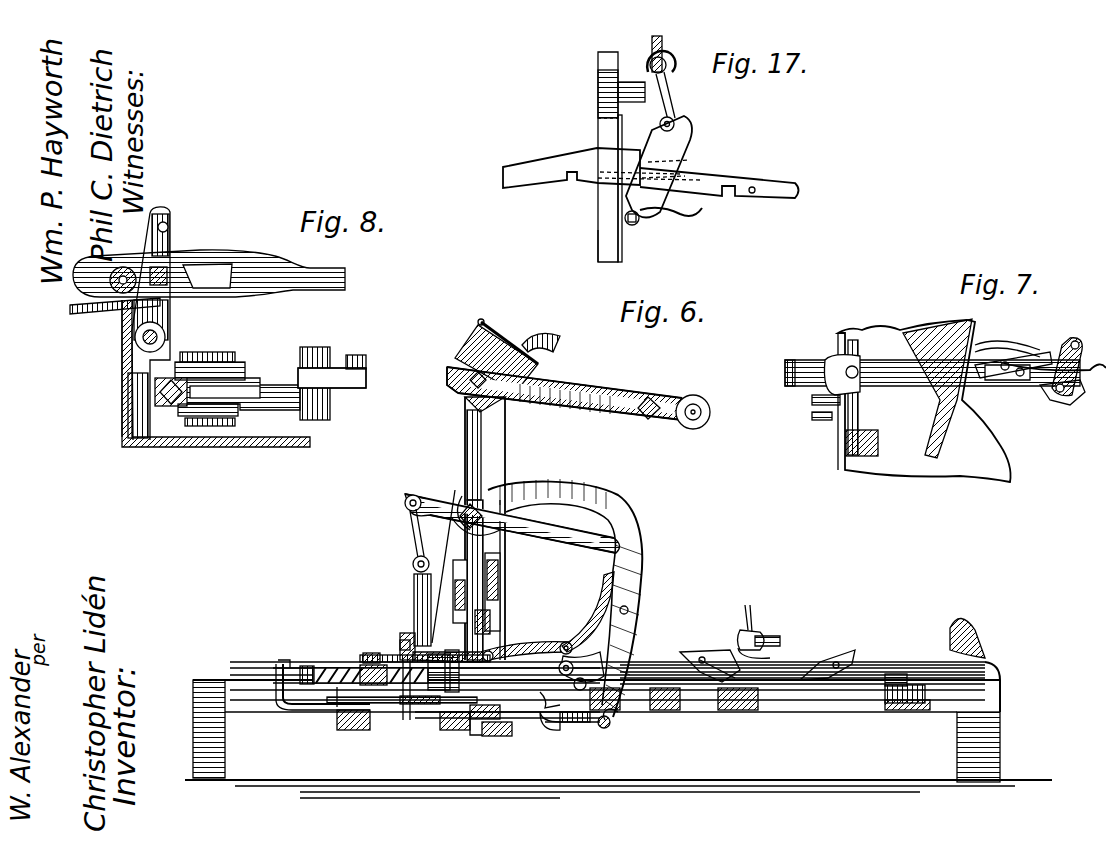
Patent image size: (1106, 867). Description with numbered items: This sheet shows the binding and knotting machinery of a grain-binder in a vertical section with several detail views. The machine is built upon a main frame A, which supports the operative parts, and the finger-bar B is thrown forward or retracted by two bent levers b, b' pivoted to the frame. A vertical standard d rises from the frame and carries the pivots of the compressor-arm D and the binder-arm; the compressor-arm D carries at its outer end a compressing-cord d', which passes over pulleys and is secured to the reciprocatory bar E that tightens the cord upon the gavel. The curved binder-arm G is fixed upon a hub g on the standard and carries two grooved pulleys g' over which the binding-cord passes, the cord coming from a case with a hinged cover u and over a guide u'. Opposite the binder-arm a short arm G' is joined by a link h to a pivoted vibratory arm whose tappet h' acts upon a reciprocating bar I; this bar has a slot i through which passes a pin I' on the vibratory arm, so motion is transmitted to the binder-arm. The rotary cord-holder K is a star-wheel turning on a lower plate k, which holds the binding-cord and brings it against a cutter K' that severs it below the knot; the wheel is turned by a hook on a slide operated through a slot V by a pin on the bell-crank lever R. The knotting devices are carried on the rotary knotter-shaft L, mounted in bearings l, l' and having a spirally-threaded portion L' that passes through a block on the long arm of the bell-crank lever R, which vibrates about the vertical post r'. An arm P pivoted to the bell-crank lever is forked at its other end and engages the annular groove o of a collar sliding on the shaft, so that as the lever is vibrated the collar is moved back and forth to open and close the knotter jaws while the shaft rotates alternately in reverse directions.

In FIG. 8, the reciprocating bar I is at (209, 271).
In FIG. 8, the slot i is at (207, 276).
In FIG. 8, the pin I' is at (160, 256).
In FIG. 6, the pin I' is at (394, 626).
In FIG. 8, the tappet h' is at (115, 314).
In FIG. 8, the rotary cord-holder K is at (168, 323).
In FIG. 7, the rotary cord-holder K is at (1065, 398).
In FIG. 6, the rotary cord-holder K is at (507, 730).
In FIG. 8, the main frame A is at (216, 388).
In FIG. 7, the main frame A is at (924, 400).
In FIG. 6, the main frame A is at (618, 739).
In FIG. 8, the rotary knotter-shaft L is at (133, 405).
In FIG. 6, the rotary knotter-shaft L is at (436, 670).
In FIG. 8, the arm P is at (210, 379).
In FIG. 6, the arm P is at (398, 644).
In FIG. 8, the bell-crank lever R is at (243, 379).
In FIG. 7, the bell-crank lever R is at (854, 398).
In FIG. 8, the vertical post r' is at (332, 373).
In FIG. 17, the vertical standard d is at (597, 157).
In FIG. 6, the vertical standard d is at (493, 528).
In FIG. 17, the reciprocatory bar E is at (601, 159).
In FIG. 17, the compressor-arm D is at (596, 222).
In FIG. 6, the compressor-arm D is at (586, 631).
In FIG. 7, the slot V is at (852, 370).
In FIG. 6, the slot V is at (340, 710).
In FIG. 7, the lower plate k is at (1068, 340).
In FIG. 6, the finger-bar B is at (858, 680).
In FIG. 6, the bent lever b is at (700, 693).
In FIG. 6, the bent lever b' is at (865, 693).
In FIG. 6, the hinged cover u is at (507, 354).
In FIG. 6, the guide u' is at (578, 398).
In FIG. 6, the curved binder-arm G is at (565, 603).
In FIG. 6, the grooved pulleys g' is at (642, 672).
In FIG. 6, the short arm G' is at (507, 509).
In FIG. 6, the hub g is at (453, 498).
In FIG. 6, the link h is at (425, 568).
In FIG. 6, the compressing-cord d' is at (502, 592).
In FIG. 6, the bearing l' is at (323, 676).
In FIG. 6, the bearing l is at (311, 667).
In FIG. 6, the spirally-threaded portion L' is at (386, 715).
In FIG. 6, the cutter K' is at (572, 704).
In FIG. 6, the annular peripheral groove o is at (545, 697).